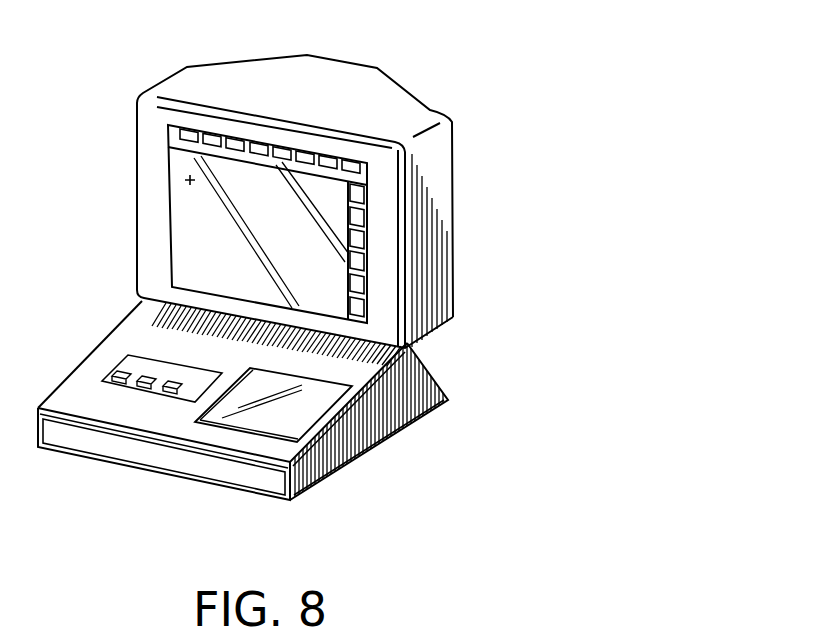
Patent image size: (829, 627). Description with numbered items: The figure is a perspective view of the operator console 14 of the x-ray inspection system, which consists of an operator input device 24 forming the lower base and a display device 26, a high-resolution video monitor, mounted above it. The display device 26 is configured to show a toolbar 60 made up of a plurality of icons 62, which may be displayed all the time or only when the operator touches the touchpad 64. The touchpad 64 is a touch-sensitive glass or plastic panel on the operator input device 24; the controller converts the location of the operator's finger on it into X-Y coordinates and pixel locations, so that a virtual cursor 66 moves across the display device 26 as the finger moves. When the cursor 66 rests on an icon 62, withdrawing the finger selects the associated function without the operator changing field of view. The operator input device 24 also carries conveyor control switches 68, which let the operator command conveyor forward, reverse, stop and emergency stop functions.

The operator console 14 is at (500, 104).
The operator input device 24 is at (376, 428).
The display device 26 is at (365, 68).
The toolbar 60 is at (372, 262).
The icons 62 is at (238, 148).
The touchpad 64 is at (273, 405).
The virtual cursor 66 is at (185, 181).
The conveyor control switches 68 is at (173, 372).